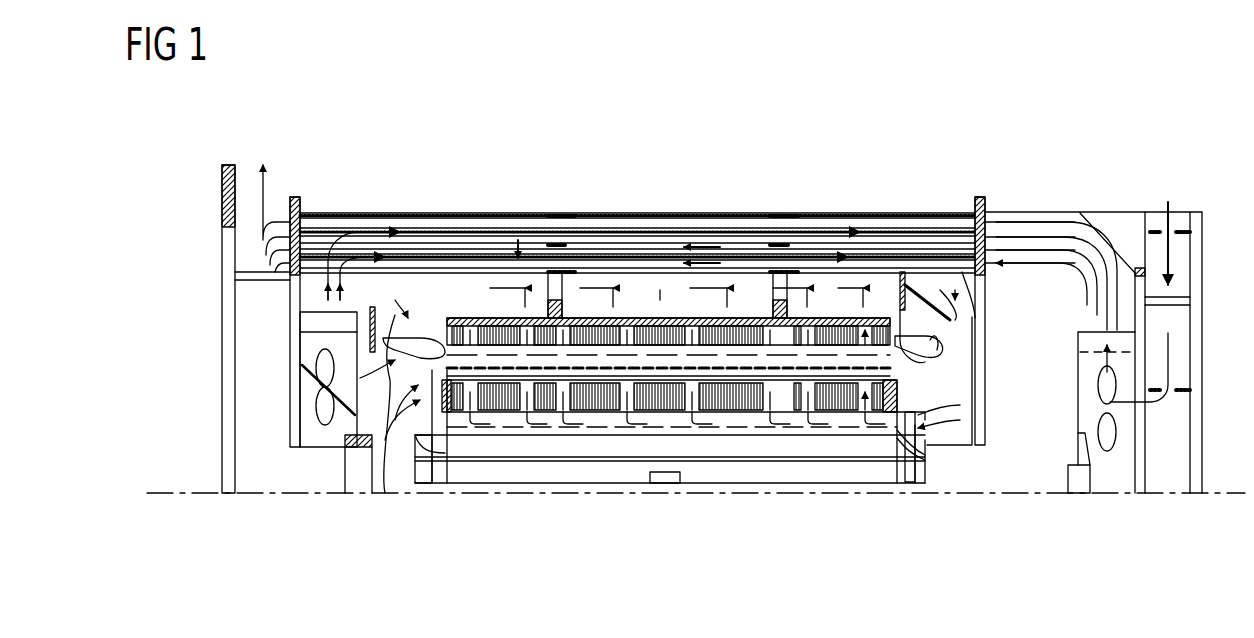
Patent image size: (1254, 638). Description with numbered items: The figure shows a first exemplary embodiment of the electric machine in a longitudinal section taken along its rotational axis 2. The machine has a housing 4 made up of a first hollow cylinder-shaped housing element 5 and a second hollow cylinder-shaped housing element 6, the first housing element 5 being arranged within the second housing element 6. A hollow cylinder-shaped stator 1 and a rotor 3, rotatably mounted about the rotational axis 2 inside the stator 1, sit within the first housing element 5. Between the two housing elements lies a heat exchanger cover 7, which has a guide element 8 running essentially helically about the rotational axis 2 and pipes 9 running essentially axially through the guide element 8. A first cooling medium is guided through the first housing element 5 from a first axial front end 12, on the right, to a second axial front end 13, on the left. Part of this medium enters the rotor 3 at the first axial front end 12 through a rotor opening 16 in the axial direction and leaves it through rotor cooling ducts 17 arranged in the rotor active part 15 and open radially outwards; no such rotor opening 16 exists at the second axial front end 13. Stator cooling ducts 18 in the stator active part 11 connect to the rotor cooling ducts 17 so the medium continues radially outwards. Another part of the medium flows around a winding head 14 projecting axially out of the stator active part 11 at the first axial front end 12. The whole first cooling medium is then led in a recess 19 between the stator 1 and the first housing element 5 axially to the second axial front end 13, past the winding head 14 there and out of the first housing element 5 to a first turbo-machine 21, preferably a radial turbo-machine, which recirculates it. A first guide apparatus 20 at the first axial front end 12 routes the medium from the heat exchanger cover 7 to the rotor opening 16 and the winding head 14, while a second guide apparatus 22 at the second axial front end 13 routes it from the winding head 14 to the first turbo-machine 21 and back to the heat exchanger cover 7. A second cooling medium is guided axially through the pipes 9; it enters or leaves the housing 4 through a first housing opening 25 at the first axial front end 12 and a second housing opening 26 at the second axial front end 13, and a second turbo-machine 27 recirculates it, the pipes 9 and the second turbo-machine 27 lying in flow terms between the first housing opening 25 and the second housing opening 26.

The stator 1 is at (663, 266).
The rotational axis 2 is at (198, 496).
The rotor 3 is at (408, 458).
The housing 4 is at (1205, 248).
The first housing element 5 is at (472, 270).
The second housing element 6 is at (338, 212).
The heat exchanger cover 7 is at (518, 240).
The guide element 8 is at (573, 222).
The pipes 9 is at (625, 250).
The stator active part 11 is at (820, 310).
The first axial front end 12 is at (966, 371).
The second axial front end 13 is at (385, 455).
The winding head 14 is at (400, 300).
The rotor active part 15 is at (597, 398).
The rotor opening 16 is at (905, 415).
The rotor cooling ducts 17 is at (762, 403).
The stator cooling ducts 18 is at (768, 310).
The recess 19 is at (657, 300).
The first guide apparatus 20 is at (963, 318).
The first turbo-machine 21 is at (330, 420).
The second guide apparatus 22 is at (358, 325).
The first housing opening 25 is at (1172, 215).
The second housing opening 26 is at (278, 210).
The second turbo-machine 27 is at (1112, 452).